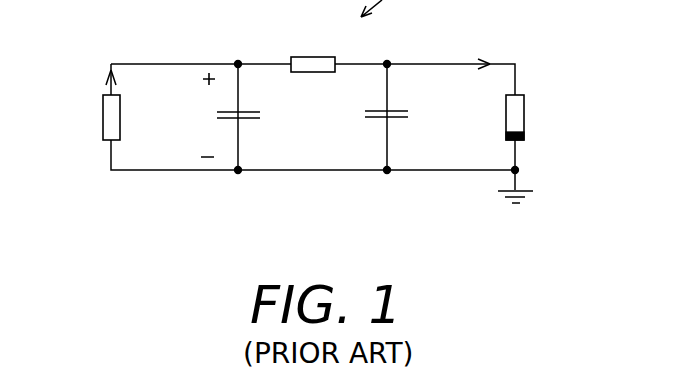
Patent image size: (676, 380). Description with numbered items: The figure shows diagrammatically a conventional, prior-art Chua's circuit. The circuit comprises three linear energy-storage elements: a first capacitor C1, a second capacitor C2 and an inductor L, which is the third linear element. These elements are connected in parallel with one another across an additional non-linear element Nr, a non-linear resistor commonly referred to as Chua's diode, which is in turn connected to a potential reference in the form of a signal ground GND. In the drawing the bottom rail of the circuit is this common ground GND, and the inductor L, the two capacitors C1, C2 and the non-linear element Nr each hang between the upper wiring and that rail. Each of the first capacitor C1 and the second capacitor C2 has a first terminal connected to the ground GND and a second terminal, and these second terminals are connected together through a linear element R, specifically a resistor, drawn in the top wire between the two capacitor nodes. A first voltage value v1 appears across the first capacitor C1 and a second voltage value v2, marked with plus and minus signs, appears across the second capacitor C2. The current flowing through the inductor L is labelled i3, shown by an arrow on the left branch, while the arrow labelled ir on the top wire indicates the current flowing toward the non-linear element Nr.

The third linear energy-storage element L is at (119, 117).
The linear element R is at (313, 51).
The first linear energy-storage element C1 is at (403, 118).
The second linear energy-storage element C2 is at (254, 118).
The non-linear element Nr is at (531, 117).
The signal ground GND is at (524, 214).
The current i3 is at (95, 76).
The resistor current ir is at (474, 52).
The first voltage value v1 is at (412, 90).
The second voltage value v2 is at (200, 115).